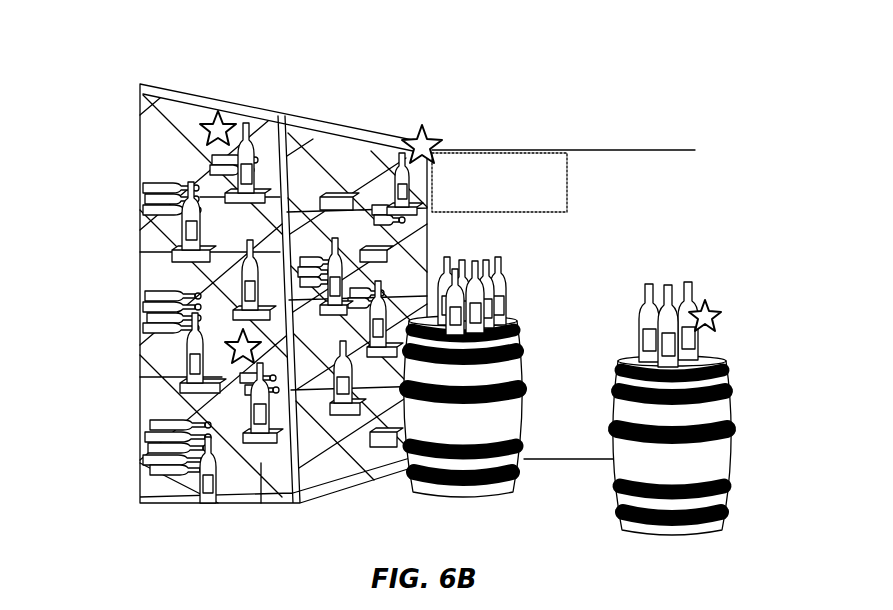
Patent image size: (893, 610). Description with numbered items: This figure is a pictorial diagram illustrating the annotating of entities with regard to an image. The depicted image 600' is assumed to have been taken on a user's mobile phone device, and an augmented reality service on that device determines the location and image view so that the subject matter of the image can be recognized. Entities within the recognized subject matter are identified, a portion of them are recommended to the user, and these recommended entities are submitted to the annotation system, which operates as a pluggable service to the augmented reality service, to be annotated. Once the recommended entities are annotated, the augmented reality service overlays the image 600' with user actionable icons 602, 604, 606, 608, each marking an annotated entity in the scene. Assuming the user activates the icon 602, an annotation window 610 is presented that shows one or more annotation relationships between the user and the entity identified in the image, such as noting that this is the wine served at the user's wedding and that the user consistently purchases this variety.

The image 600' is at (242, 293).
The user actionable icon 602 is at (219, 102).
The user actionable icon 604 is at (220, 333).
The user actionable icon 606 is at (706, 296).
The user actionable icon 608 is at (423, 124).
The annotation window 610 is at (557, 145).